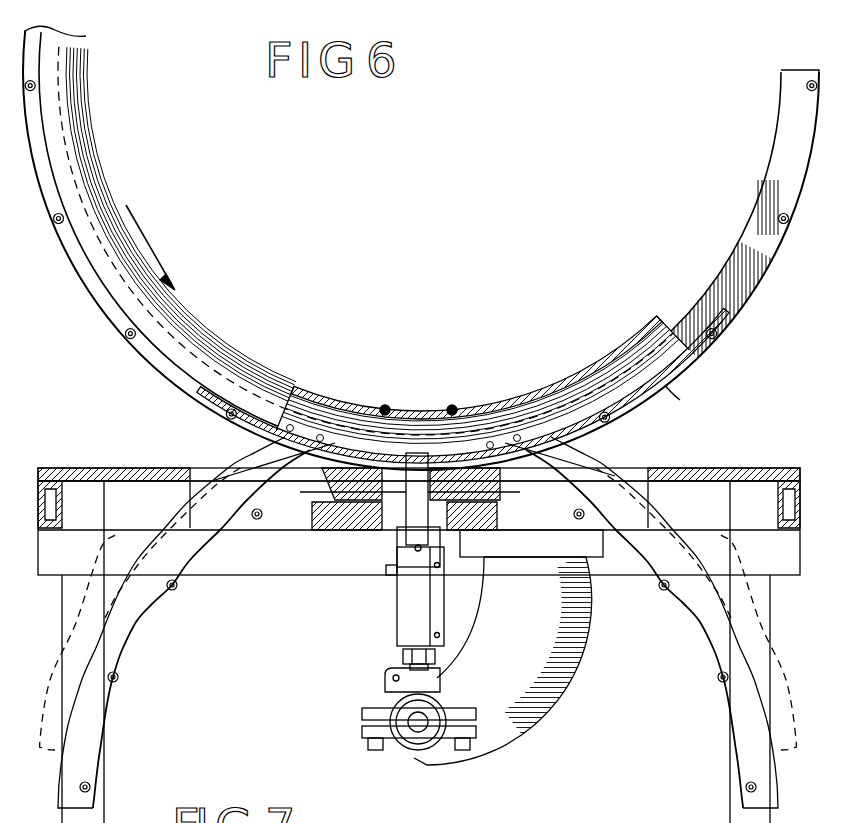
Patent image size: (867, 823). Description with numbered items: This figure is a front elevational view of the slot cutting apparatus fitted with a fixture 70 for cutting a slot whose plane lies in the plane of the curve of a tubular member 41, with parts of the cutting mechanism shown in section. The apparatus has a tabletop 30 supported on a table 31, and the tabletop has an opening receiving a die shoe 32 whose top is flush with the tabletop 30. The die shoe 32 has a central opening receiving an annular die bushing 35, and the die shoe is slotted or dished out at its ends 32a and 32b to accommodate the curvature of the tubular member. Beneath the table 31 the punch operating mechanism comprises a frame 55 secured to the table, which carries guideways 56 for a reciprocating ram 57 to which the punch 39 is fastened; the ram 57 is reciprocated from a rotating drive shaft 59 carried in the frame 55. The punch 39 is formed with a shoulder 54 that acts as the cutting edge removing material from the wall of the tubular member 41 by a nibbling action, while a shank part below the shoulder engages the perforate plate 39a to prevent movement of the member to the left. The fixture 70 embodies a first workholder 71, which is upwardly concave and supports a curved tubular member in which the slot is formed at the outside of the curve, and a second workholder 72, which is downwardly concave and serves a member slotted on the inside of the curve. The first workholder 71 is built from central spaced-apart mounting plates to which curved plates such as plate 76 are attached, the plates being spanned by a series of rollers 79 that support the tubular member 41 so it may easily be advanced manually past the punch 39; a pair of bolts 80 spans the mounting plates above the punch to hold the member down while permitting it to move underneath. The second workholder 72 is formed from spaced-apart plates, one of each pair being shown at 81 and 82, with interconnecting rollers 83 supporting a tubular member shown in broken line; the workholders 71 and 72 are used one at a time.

The tabletop 30 is at (758, 470).
The table 31 is at (695, 490).
The die shoe 32 is at (350, 470).
The dished-out end of die shoe 32a is at (365, 502).
The dished-out end of die shoe 32b is at (585, 462).
The die bushing 35 is at (443, 468).
The punch 39 is at (404, 545).
The perforate plate 39a is at (531, 543).
The tubular member 41 is at (88, 128).
The shoulder 54 is at (414, 462).
The frame 55 is at (545, 680).
The guideways 56 is at (445, 604).
The ram 57 is at (400, 625).
The drive shaft 59 is at (425, 718).
The fixture 70 is at (740, 240).
The first workholder 71 is at (690, 317).
The second workholder 72 is at (710, 655).
The curved plate 76 is at (775, 143).
The rollers 79 is at (127, 338).
The bolts 80 is at (450, 406).
The plate of second workholder 81 is at (112, 693).
The plate of second workholder 82 is at (690, 633).
The rollers 83 is at (118, 675).